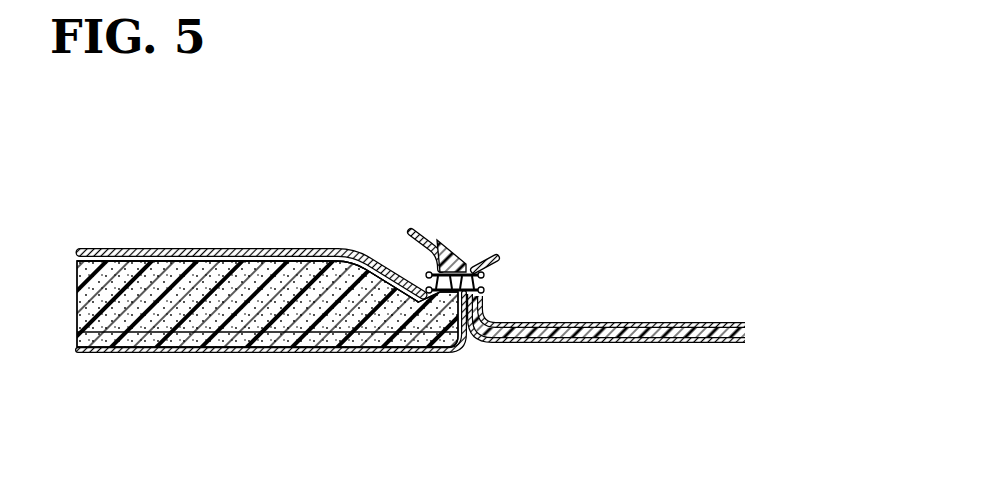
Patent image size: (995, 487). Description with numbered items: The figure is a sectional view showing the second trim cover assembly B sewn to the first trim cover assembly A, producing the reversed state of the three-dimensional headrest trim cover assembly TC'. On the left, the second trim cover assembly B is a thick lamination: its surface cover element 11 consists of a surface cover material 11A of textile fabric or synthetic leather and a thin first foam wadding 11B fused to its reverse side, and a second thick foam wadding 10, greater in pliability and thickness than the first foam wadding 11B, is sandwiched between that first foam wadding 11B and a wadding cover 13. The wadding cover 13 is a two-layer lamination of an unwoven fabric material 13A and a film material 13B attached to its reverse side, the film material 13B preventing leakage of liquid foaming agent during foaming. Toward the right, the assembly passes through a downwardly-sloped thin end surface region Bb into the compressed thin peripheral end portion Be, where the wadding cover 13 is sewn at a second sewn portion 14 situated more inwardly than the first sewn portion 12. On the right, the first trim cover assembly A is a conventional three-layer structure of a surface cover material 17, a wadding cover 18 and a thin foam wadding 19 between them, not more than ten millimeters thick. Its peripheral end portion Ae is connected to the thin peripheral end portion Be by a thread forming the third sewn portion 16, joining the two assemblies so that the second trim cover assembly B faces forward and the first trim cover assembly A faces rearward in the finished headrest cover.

The second thick foam wadding 10 is at (108, 346).
The surface cover element 11 is at (270, 383).
The surface cover material 11A is at (229, 349).
The first foam wadding 11B is at (188, 417).
The first sewn portion 12 is at (475, 266).
The wadding cover 13 is at (215, 216).
The unwoven fabric material 13A is at (107, 248).
The film material 13B is at (80, 259).
The second sewn portion 14 is at (430, 274).
The third sewn portion 16 is at (488, 290).
The surface cover material 17 is at (683, 344).
The wadding cover 18 is at (683, 323).
The thin foam wadding 19 is at (660, 331).
The downwardly-sloped thin end surface region Bb is at (381, 262).
The thin peripheral end portion Be is at (452, 221).
The peripheral end portion Ae is at (512, 243).
The first trim cover assembly A is at (631, 280).
The second trim cover assembly B is at (150, 367).
The reversed state of three-dimensional headrest trim cover assembly TC' is at (646, 140).